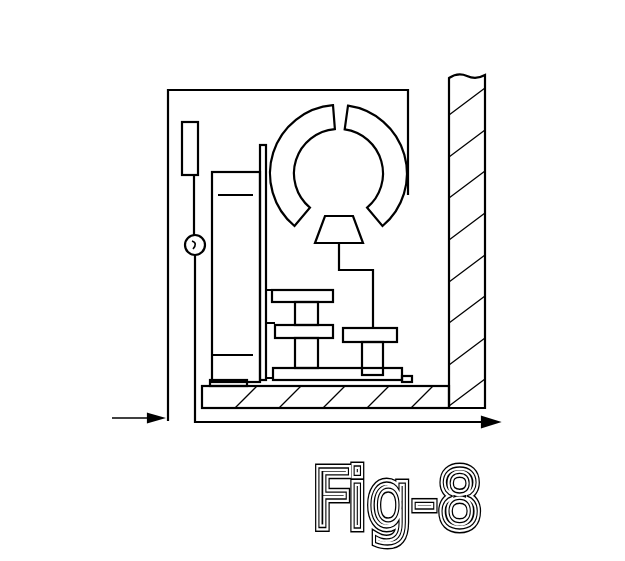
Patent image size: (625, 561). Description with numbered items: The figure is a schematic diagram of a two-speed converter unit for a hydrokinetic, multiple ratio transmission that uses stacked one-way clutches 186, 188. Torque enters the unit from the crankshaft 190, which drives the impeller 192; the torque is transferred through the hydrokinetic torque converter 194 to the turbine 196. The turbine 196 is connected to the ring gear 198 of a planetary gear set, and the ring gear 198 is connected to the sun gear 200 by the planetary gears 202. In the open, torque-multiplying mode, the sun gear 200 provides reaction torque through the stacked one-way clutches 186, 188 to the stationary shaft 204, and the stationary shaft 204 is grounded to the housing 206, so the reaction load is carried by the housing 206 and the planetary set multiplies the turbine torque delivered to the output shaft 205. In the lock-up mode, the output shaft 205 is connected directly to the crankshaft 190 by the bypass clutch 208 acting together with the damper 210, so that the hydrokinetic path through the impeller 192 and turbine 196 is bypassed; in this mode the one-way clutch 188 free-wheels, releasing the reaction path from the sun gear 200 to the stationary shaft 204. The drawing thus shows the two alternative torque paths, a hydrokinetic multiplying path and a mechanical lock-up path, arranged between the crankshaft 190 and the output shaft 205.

The one-way clutch 186 is at (288, 294).
The one-way clutch 188 is at (305, 357).
The crankshaft 190 is at (167, 407).
The impeller 192 is at (392, 201).
The hydrokinetic torque converter 194 is at (356, 178).
The turbine 196 is at (317, 118).
The ring gear 198 is at (240, 182).
The sun gear 200 is at (223, 366).
The planetary gears 202 is at (200, 308).
The stationary shaft 204 is at (393, 376).
The output shaft 205 is at (408, 422).
The housing 206 is at (467, 207).
The bypass clutch 208 is at (183, 140).
The damper 210 is at (185, 246).